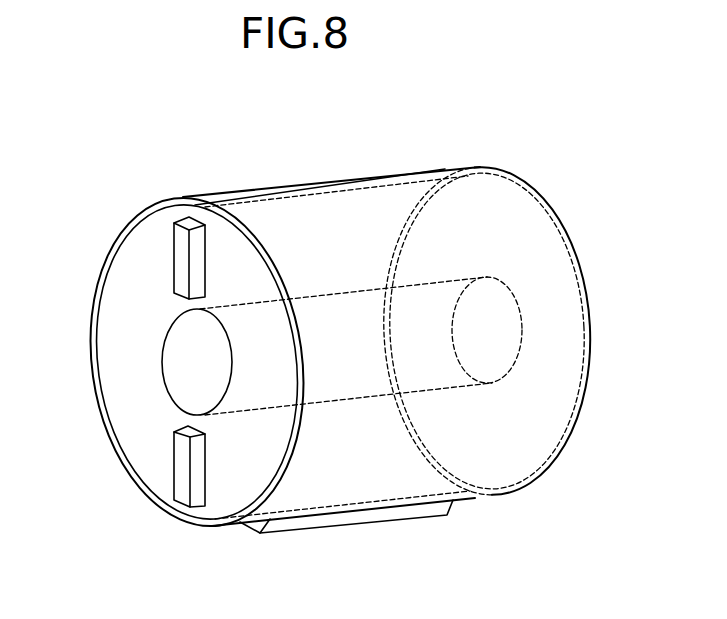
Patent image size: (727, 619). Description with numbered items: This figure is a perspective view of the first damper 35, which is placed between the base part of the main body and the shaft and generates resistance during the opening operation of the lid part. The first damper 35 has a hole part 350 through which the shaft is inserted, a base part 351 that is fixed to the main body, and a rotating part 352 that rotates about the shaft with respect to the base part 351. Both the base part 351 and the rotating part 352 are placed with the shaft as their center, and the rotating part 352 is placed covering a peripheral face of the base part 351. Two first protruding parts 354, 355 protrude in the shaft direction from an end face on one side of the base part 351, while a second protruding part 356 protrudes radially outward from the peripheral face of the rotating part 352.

The first damper 35 is at (505, 143).
The hole part 350 is at (183, 358).
The base part 351 is at (127, 312).
The rotating part 352 is at (134, 231).
The first protruding part 354 is at (183, 258).
The first protruding part 355 is at (182, 465).
The second protruding part 356 is at (360, 515).